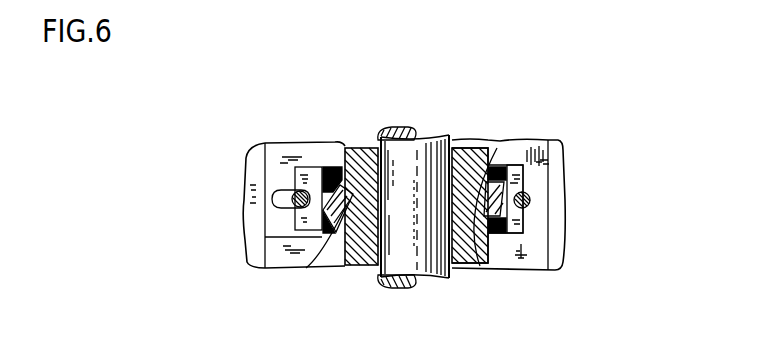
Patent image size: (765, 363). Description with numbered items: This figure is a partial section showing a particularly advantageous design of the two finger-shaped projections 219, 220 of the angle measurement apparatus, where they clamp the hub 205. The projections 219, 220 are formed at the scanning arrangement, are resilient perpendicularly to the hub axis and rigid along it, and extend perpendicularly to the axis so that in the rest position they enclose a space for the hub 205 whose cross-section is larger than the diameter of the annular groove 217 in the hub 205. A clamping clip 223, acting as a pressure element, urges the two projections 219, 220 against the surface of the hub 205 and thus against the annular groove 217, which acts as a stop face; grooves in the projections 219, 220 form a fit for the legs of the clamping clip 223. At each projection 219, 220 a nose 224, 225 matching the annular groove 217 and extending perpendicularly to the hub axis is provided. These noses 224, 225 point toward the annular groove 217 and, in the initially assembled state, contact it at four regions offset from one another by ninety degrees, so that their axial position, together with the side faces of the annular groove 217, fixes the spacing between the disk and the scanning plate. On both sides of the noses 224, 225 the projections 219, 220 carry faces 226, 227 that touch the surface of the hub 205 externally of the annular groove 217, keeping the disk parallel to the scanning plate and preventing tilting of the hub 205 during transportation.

The hub 205 is at (355, 262).
The annular groove 217 is at (493, 270).
The finger-shaped projection 219 is at (525, 217).
The finger-shaped projection 220 is at (267, 239).
The clamping clip 223 is at (530, 198).
The nose 224 is at (322, 192).
The nose 225 is at (540, 160).
The face 226 is at (337, 160).
The face 227 is at (507, 160).